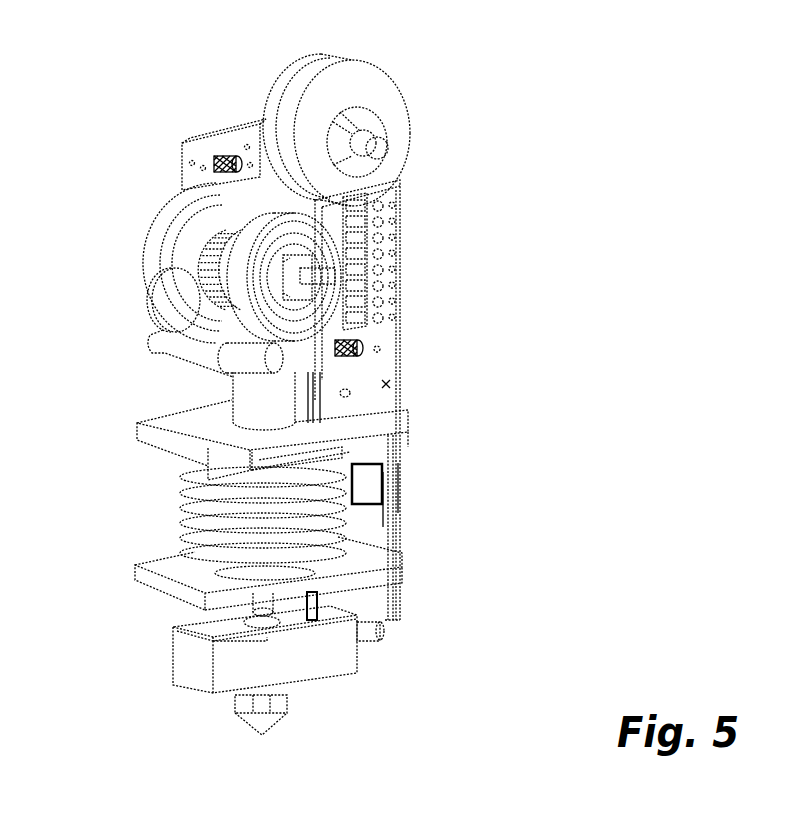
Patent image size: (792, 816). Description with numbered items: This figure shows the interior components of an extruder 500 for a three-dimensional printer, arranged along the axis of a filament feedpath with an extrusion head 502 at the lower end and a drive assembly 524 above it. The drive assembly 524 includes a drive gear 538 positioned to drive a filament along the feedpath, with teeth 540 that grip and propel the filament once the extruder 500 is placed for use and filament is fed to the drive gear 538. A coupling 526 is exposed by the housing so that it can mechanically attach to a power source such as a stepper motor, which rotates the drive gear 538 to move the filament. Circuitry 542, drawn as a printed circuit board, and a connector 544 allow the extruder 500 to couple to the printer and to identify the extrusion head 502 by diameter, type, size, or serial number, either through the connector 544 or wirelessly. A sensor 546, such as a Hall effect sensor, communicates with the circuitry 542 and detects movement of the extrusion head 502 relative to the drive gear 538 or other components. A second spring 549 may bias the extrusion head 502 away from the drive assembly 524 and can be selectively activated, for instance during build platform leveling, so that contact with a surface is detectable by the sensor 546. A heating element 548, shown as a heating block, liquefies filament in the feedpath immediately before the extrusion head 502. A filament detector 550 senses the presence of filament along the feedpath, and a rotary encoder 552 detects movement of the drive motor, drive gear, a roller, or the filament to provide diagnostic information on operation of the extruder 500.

The extruder 500 is at (503, 129).
The extrusion head 502 is at (273, 720).
The drive assembly 524 is at (137, 270).
The coupling 526 is at (293, 317).
The drive gear 538 is at (200, 237).
The teeth 540 is at (228, 233).
The circuitry 542 is at (400, 353).
The connector 544 is at (395, 270).
The sensor 546 is at (383, 487).
The heating element 548 is at (170, 652).
The second spring 549 is at (318, 595).
The filament detector 550 is at (226, 151).
The rotary encoder 552 is at (393, 82).